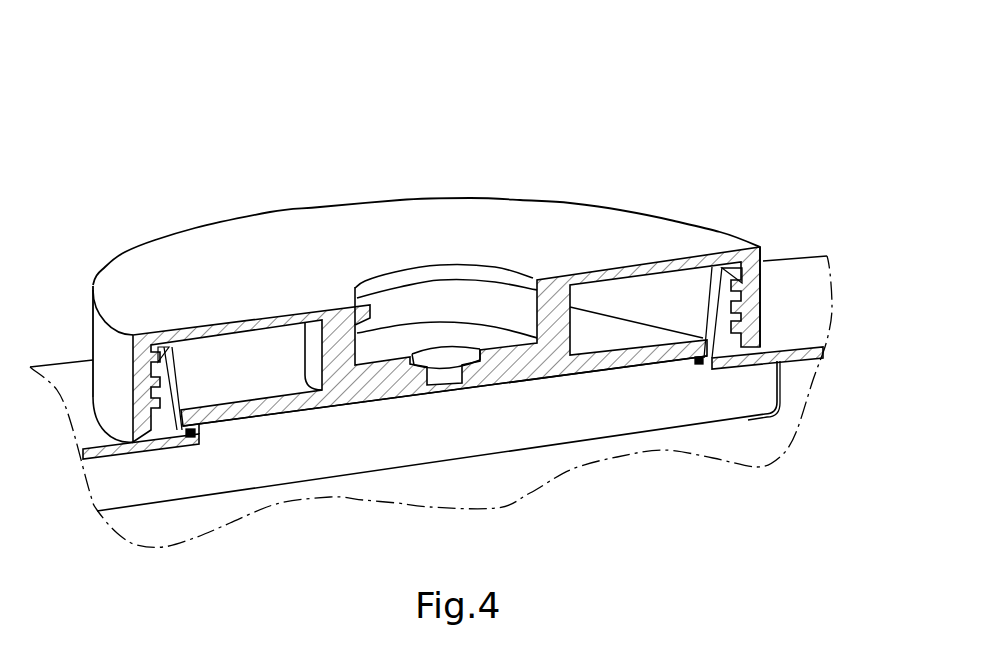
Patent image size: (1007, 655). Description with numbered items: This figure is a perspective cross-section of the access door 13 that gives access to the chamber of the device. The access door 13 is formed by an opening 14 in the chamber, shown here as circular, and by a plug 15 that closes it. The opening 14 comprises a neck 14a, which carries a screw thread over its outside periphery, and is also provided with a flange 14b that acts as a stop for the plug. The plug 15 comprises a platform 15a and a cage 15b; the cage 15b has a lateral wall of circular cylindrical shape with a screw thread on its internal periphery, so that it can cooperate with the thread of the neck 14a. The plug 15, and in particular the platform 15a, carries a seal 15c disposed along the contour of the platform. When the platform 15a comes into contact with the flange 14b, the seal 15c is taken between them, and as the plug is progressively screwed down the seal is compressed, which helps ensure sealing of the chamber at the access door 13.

The access door 13 is at (647, 136).
The opening 14 is at (585, 423).
The neck 14a is at (723, 307).
The flange 14b is at (705, 366).
The plug 15 is at (322, 198).
The platform 15a is at (350, 401).
The cage 15b is at (398, 198).
The seal 15c is at (190, 416).